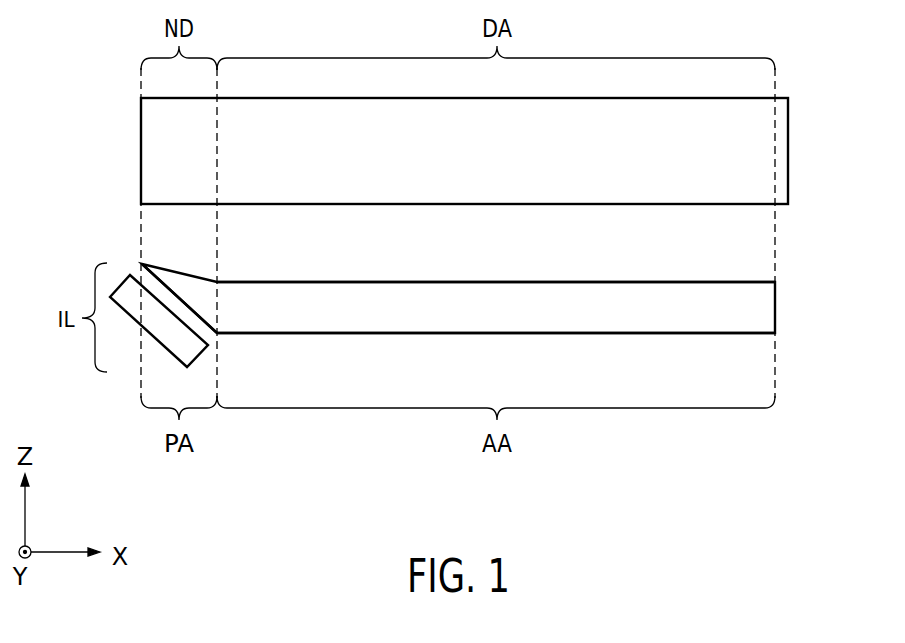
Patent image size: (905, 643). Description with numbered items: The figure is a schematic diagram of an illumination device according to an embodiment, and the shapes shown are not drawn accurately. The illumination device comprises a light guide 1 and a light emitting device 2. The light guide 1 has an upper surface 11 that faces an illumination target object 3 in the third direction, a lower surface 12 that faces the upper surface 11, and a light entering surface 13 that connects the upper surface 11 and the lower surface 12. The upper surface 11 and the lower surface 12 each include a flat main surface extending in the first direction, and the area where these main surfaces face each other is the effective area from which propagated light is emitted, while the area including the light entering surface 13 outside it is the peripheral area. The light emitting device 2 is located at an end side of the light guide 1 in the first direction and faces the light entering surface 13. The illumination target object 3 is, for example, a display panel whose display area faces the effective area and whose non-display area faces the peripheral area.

The light guide 1 is at (775, 305).
The light emitting device 2 is at (178, 346).
The illumination target object 3 is at (788, 150).
The upper surface 11 is at (662, 280).
The lower surface 12 is at (627, 337).
The light entering surface 13 is at (179, 298).